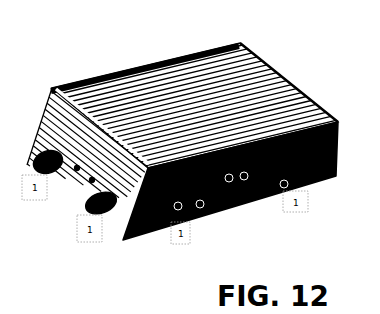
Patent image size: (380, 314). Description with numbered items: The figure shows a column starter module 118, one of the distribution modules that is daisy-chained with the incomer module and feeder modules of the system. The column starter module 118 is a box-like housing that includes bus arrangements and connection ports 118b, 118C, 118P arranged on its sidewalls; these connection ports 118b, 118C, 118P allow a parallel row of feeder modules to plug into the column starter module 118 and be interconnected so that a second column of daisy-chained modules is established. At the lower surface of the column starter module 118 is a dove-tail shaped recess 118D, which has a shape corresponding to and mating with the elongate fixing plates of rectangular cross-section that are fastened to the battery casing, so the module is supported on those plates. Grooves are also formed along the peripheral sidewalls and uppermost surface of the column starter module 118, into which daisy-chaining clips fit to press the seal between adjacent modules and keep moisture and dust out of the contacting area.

The column starter module 118 is at (192, 97).
The connection port 118C is at (92, 180).
The connection port 118b is at (97, 203).
The connection port 118P is at (178, 208).
The dove-tail shaped recess 118D is at (200, 206).